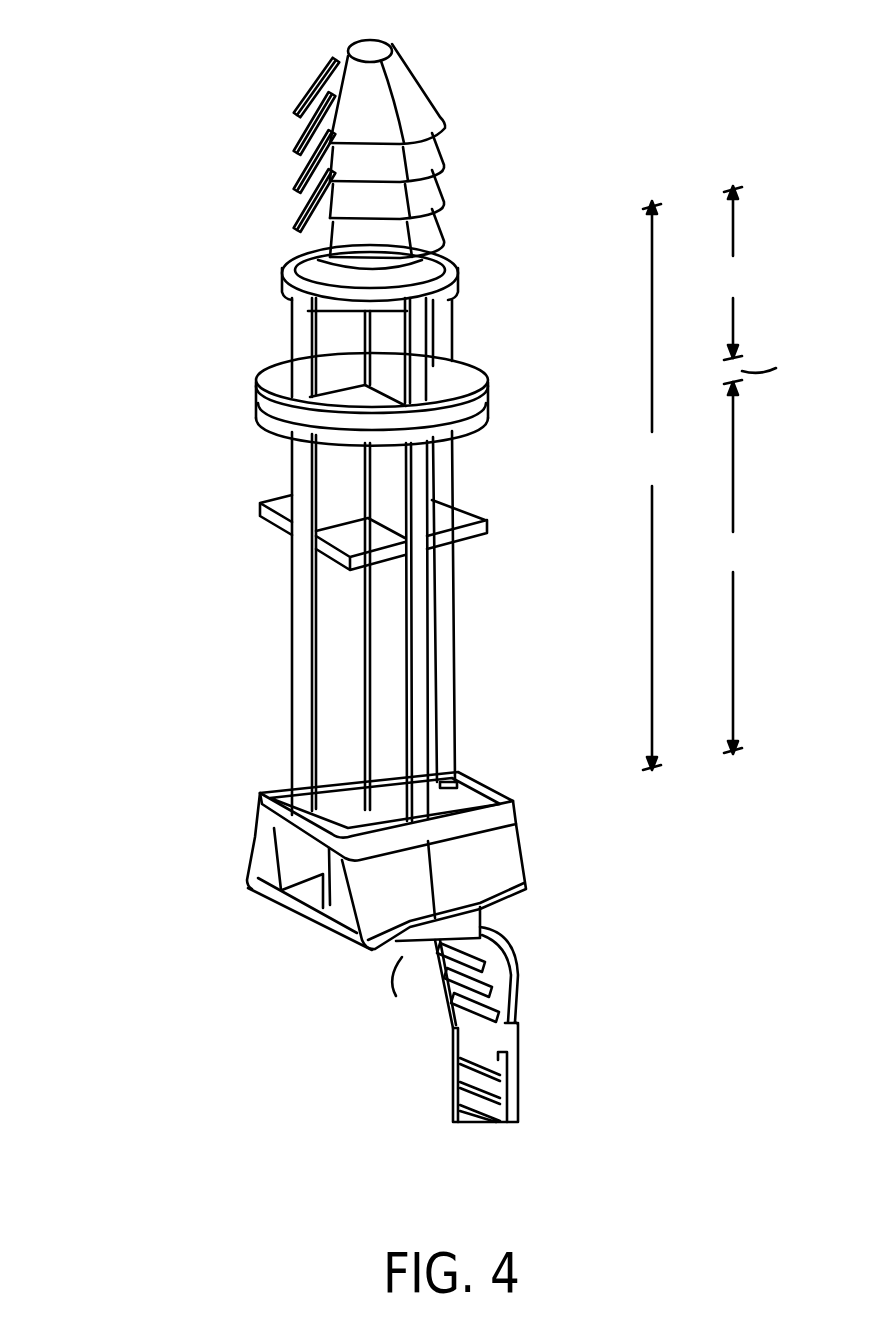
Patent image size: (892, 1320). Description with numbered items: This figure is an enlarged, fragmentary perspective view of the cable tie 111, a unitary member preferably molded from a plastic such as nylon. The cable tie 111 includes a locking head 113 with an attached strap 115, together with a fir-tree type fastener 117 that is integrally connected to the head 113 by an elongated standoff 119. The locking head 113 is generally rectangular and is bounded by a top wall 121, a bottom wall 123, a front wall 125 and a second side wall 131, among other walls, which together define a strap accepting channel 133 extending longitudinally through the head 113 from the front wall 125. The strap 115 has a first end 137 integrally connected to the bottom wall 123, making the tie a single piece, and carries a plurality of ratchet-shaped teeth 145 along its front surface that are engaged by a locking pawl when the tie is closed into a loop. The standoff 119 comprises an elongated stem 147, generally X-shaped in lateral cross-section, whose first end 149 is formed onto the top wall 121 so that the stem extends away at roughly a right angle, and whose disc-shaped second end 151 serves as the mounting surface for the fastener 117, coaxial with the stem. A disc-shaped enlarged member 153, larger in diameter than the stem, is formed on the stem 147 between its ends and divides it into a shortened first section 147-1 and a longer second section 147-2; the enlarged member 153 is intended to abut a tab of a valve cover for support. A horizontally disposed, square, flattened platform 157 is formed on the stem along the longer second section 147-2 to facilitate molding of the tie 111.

The cable tie 111 is at (212, 1112).
The locking head 113 is at (527, 887).
The strap 115 is at (511, 1106).
The fir-tree type fastener 117 is at (447, 116).
The elongated standoff 119 is at (215, 689).
The top wall 121 is at (485, 797).
The bottom wall 123 is at (497, 903).
The front wall 125 is at (340, 917).
The second side wall 131 is at (505, 855).
The strap accepting channel 133 is at (284, 855).
The first end 137 is at (525, 970).
The ratchet-shaped teeth 145 is at (458, 1118).
The elongated stem 147 is at (428, 621).
The shortened first section 147-1 is at (291, 335).
The longer second section 147-2 is at (291, 592).
The first end 149 is at (448, 777).
The second end 151 is at (459, 283).
The enlarged member 153 is at (488, 410).
The platform 157 is at (462, 518).